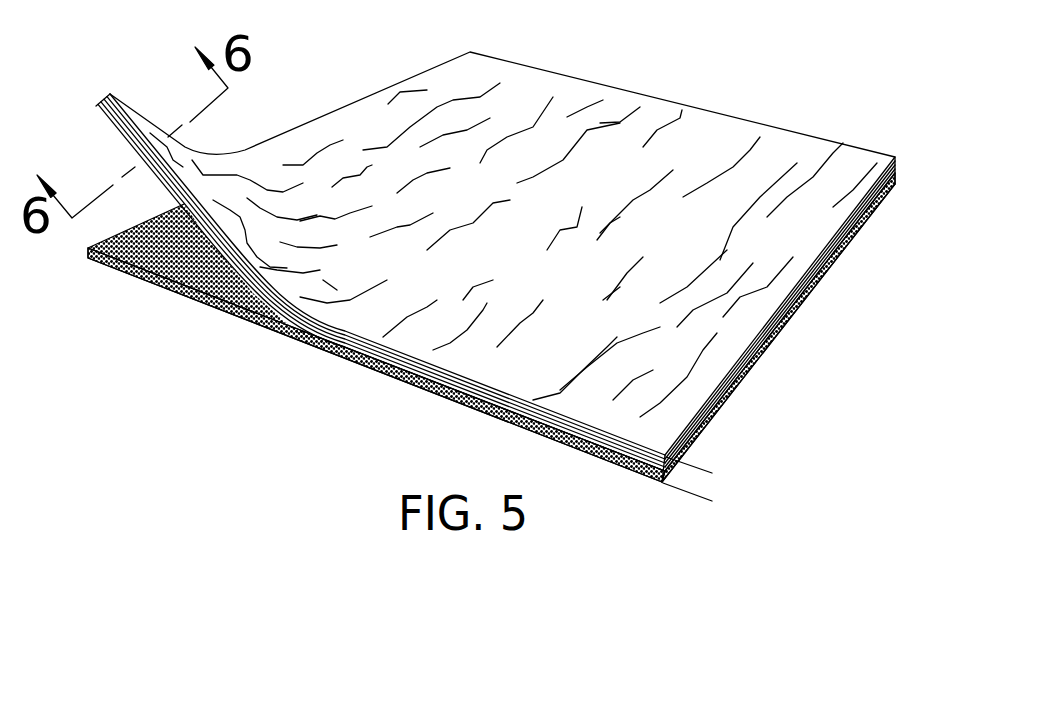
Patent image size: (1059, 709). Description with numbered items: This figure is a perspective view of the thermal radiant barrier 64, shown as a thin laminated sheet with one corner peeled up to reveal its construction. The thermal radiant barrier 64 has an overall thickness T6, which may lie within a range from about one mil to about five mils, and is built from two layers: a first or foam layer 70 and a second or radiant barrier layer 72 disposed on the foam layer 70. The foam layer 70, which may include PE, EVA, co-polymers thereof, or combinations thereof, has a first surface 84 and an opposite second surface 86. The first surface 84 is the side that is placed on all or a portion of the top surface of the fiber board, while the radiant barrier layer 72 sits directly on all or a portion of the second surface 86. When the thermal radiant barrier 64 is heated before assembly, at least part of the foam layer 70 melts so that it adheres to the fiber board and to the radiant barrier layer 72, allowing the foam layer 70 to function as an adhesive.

The thermal radiant barrier 64 is at (324, 54).
The radiant barrier layer 72 is at (100, 98).
The foam layer 70 is at (140, 277).
The second surface 86 is at (160, 231).
The first surface 84 is at (182, 317).
The thickness T6 is at (710, 432).